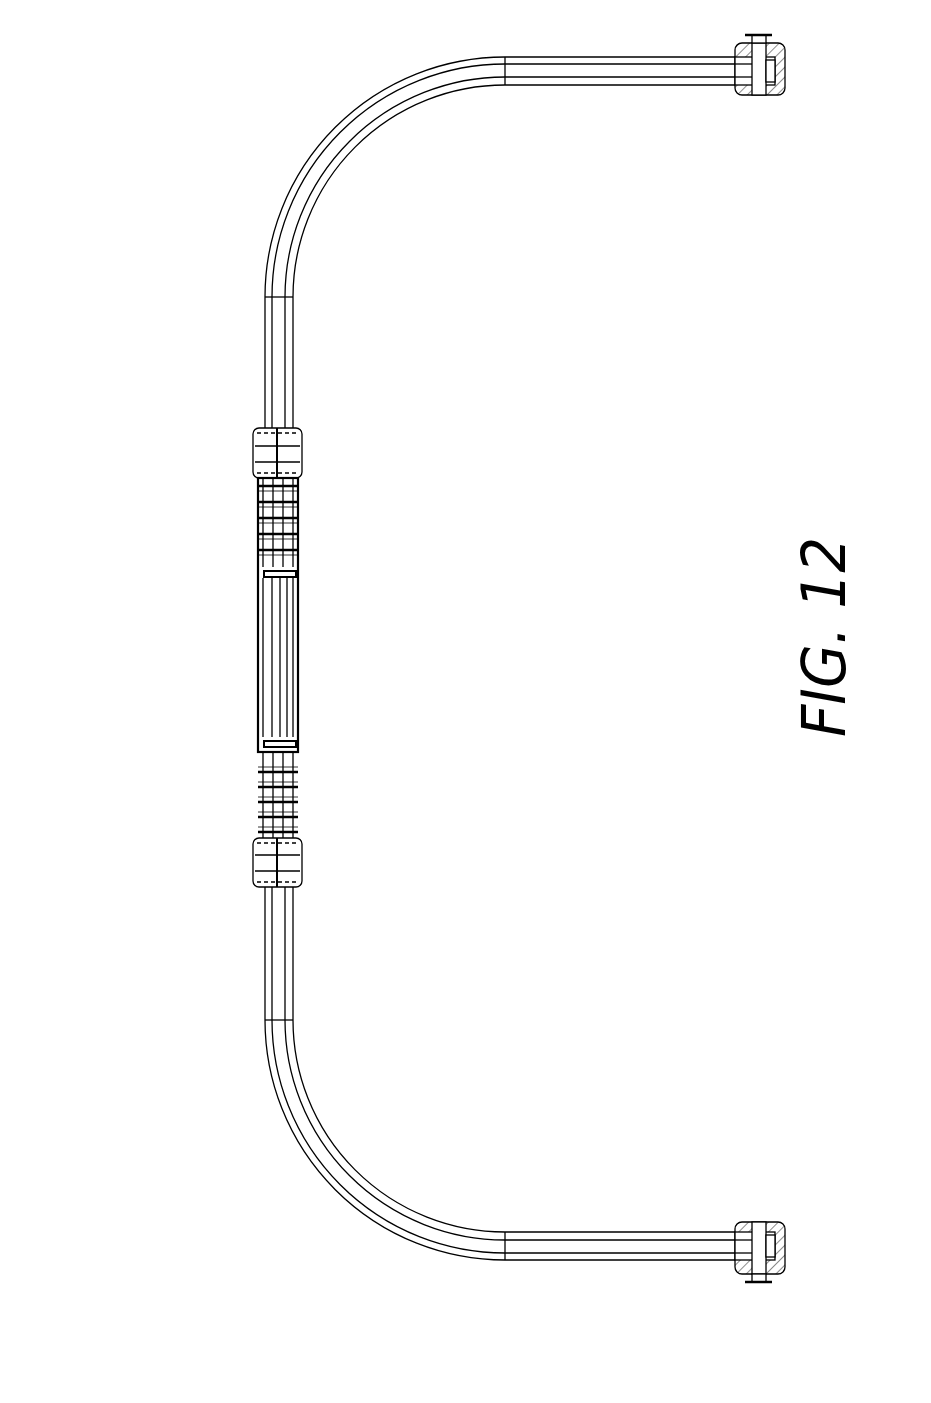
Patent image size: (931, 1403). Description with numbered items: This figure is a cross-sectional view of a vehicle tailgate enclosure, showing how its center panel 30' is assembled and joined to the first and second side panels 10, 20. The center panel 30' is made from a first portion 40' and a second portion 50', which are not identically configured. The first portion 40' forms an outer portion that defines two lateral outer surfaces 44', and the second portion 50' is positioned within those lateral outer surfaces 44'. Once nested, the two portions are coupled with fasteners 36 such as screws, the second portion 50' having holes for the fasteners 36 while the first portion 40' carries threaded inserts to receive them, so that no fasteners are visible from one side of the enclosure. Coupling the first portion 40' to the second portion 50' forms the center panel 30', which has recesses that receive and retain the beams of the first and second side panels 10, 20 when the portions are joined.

The first side panel 10 is at (397, 1256).
The second side panel 20 is at (232, 123).
The center panel 30' is at (242, 656).
The fasteners 36 is at (298, 577).
The first portion 40' is at (183, 661).
The lateral outer surfaces 44' is at (319, 656).
The second portion 50' is at (351, 658).